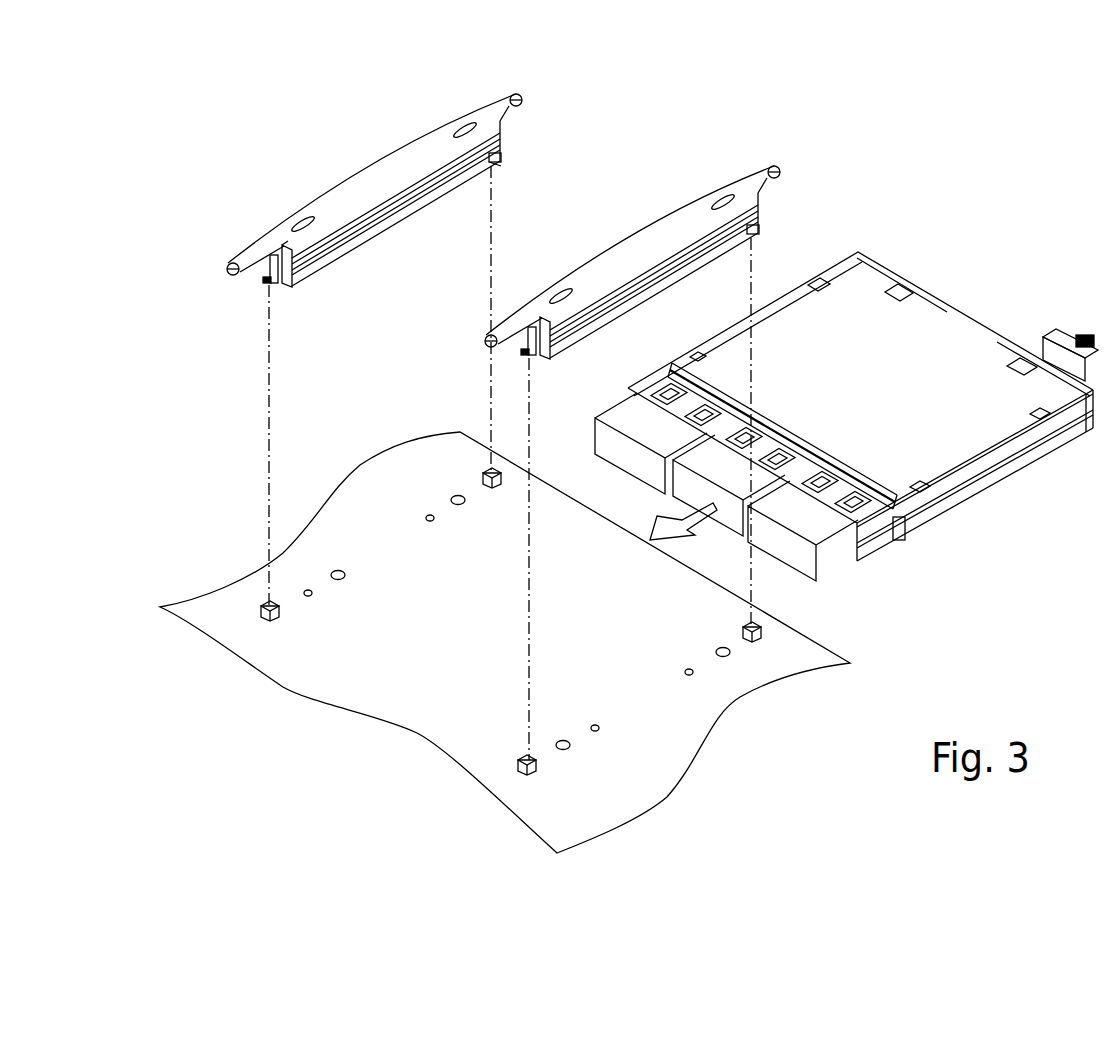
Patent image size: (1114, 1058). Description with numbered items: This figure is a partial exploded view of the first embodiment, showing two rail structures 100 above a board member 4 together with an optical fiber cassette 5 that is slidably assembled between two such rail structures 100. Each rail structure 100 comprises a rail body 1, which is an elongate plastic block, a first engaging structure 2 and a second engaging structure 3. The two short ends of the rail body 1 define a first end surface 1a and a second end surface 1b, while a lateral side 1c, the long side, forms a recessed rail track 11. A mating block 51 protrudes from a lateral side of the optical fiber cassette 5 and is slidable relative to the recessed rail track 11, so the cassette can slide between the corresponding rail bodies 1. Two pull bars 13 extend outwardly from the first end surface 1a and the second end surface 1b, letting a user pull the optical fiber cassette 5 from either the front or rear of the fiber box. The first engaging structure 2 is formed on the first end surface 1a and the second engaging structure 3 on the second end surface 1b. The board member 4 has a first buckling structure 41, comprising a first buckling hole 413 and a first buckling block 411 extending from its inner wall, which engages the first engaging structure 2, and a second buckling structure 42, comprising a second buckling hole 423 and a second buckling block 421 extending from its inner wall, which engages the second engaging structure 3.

The rail structure 100 is at (336, 188).
The rail body 1 is at (392, 165).
The recessed rail track 11 is at (356, 226).
The pull bar 13 is at (508, 96).
The first end surface 1a is at (282, 290).
The second end surface 1b is at (494, 154).
The lateral side 1c is at (424, 205).
The first engaging structure 2 is at (262, 274).
The second engaging structure 3 is at (502, 163).
The board member 4 is at (465, 662).
The first buckling structure 41 is at (265, 606).
The first buckling block 411 is at (258, 613).
The first buckling hole 413 is at (272, 621).
The second buckling structure 42 is at (486, 477).
The second buckling block 421 is at (485, 480).
The second buckling hole 423 is at (491, 490).
The optical fiber cassette 5 is at (872, 395).
The mating block 51 is at (994, 482).